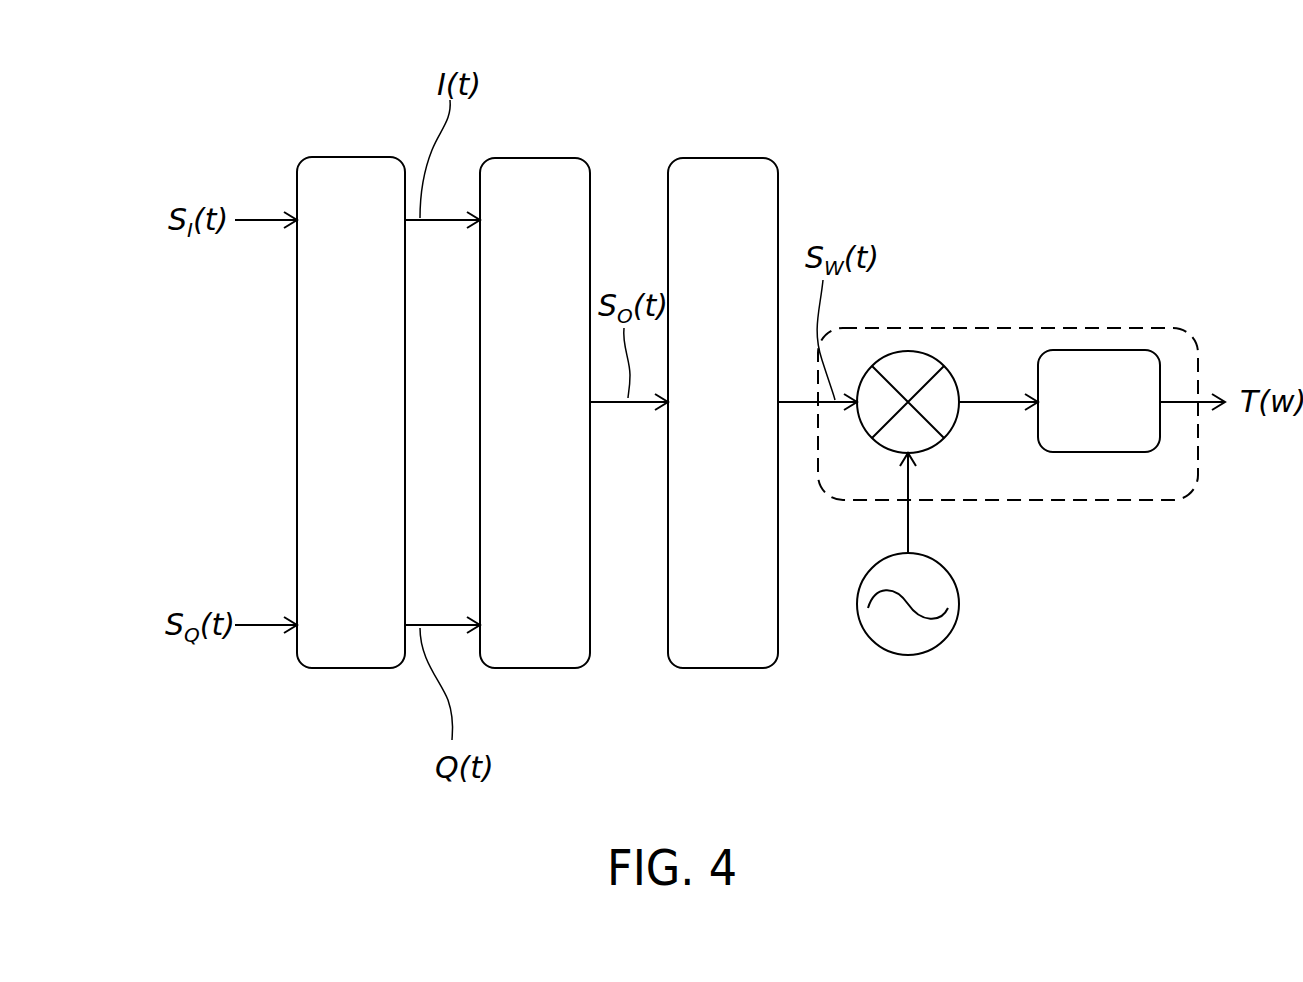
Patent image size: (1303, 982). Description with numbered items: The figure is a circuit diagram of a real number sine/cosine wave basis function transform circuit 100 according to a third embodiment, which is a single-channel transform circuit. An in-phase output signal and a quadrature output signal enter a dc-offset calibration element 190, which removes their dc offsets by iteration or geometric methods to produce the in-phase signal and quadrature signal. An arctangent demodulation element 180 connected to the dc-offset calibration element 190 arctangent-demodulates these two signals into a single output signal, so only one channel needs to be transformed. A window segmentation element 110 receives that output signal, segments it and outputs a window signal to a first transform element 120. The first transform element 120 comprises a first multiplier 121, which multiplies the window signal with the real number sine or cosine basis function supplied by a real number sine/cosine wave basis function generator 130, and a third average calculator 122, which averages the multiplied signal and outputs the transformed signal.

The real number sine/cosine wave basis function transform circuit 100 is at (133, 118).
The dc-offset calibration element 190 is at (340, 157).
The arctangent demodulation element 180 is at (520, 158).
The window segmentation element 110 is at (712, 158).
The first transform element 120 is at (1015, 328).
The first multiplier 121 is at (908, 351).
The third average calculator 122 is at (1120, 350).
The real number sine/cosine wave basis function generator 130 is at (960, 604).